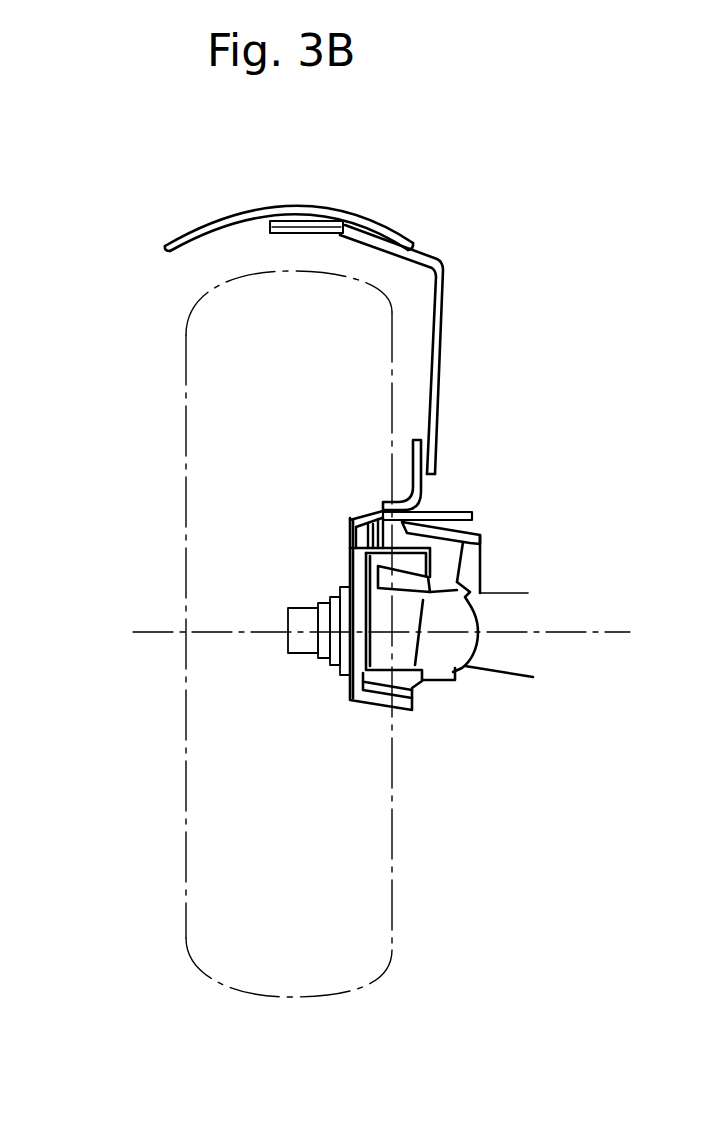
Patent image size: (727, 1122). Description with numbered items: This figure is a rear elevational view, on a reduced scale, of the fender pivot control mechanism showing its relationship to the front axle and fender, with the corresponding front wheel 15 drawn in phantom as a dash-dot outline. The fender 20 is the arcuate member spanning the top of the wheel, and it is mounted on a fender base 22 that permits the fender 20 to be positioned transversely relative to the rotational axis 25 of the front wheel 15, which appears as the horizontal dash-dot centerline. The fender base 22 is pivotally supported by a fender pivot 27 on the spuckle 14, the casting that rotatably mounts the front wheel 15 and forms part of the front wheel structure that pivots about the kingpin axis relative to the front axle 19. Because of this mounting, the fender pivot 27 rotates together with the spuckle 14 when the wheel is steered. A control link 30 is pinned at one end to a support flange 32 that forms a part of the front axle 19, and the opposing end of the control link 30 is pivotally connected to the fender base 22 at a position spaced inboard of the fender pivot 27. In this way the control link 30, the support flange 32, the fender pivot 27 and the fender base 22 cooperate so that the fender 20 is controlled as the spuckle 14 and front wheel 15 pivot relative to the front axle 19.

The spuckle 14 is at (346, 585).
The front wheel 15 is at (184, 352).
The front axle 19 is at (506, 603).
The fender 20 is at (357, 213).
The fender base 22 is at (448, 511).
The rotational axis 25 is at (163, 633).
The fender pivot 27 is at (347, 532).
The control link 30 is at (475, 532).
The support flange 32 is at (478, 553).